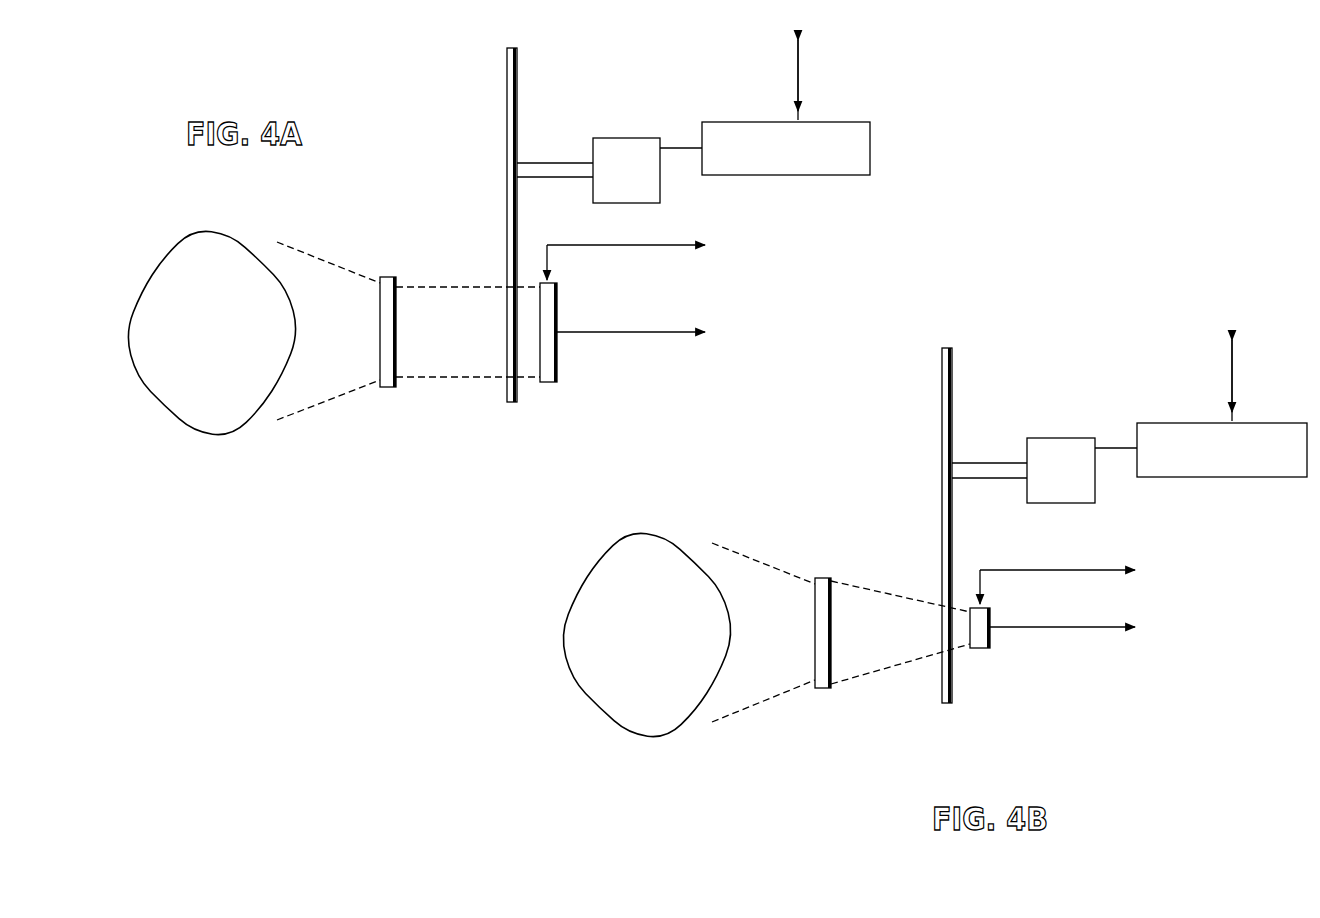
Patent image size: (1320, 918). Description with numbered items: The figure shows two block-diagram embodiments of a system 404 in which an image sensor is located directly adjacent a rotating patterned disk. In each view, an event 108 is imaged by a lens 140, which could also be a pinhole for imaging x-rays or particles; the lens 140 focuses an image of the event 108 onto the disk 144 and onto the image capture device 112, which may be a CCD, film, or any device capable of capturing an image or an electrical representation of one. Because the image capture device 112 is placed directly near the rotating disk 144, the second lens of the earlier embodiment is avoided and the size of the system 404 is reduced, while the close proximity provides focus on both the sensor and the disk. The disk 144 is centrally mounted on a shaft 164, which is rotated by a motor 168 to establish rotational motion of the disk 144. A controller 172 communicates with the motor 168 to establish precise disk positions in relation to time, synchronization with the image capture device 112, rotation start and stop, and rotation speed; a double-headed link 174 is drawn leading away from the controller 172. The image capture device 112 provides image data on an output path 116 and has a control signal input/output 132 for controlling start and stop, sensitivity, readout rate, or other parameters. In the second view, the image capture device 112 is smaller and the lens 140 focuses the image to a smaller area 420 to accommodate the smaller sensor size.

In FIG. 4A, the event 108 is at (198, 383).
In FIG. 4B, the event 108 is at (631, 684).
In FIG. 4A, the image capture device 112 is at (545, 384).
In FIG. 4B, the image capture device 112 is at (977, 650).
In FIG. 4A, the output path 116 is at (630, 335).
In FIG. 4B, the output path 116 is at (1062, 630).
In FIG. 4A, the control signal input/output 132 is at (560, 243).
In FIG. 4B, the control signal input/output 132 is at (995, 568).
In FIG. 4A, the lens 140 is at (385, 388).
In FIG. 4B, the lens 140 is at (818, 690).
In FIG. 4A, the disk 144 is at (517, 67).
In FIG. 4B, the disk 144 is at (953, 370).
In FIG. 4A, the shaft 164 is at (548, 163).
In FIG. 4B, the shaft 164 is at (983, 463).
In FIG. 4A, the motor 168 is at (623, 138).
In FIG. 4B, the motor 168 is at (1058, 438).
In FIG. 4A, the controller 172 is at (735, 122).
In FIG. 4B, the controller 172 is at (1170, 423).
In FIG. 4A, the controller communication link 174 is at (800, 66).
In FIG. 4B, the controller communication link 174 is at (1235, 366).
In FIG. 4A, the system 404 is at (268, 493).
In FIG. 4B, the smaller area 420 is at (933, 662).